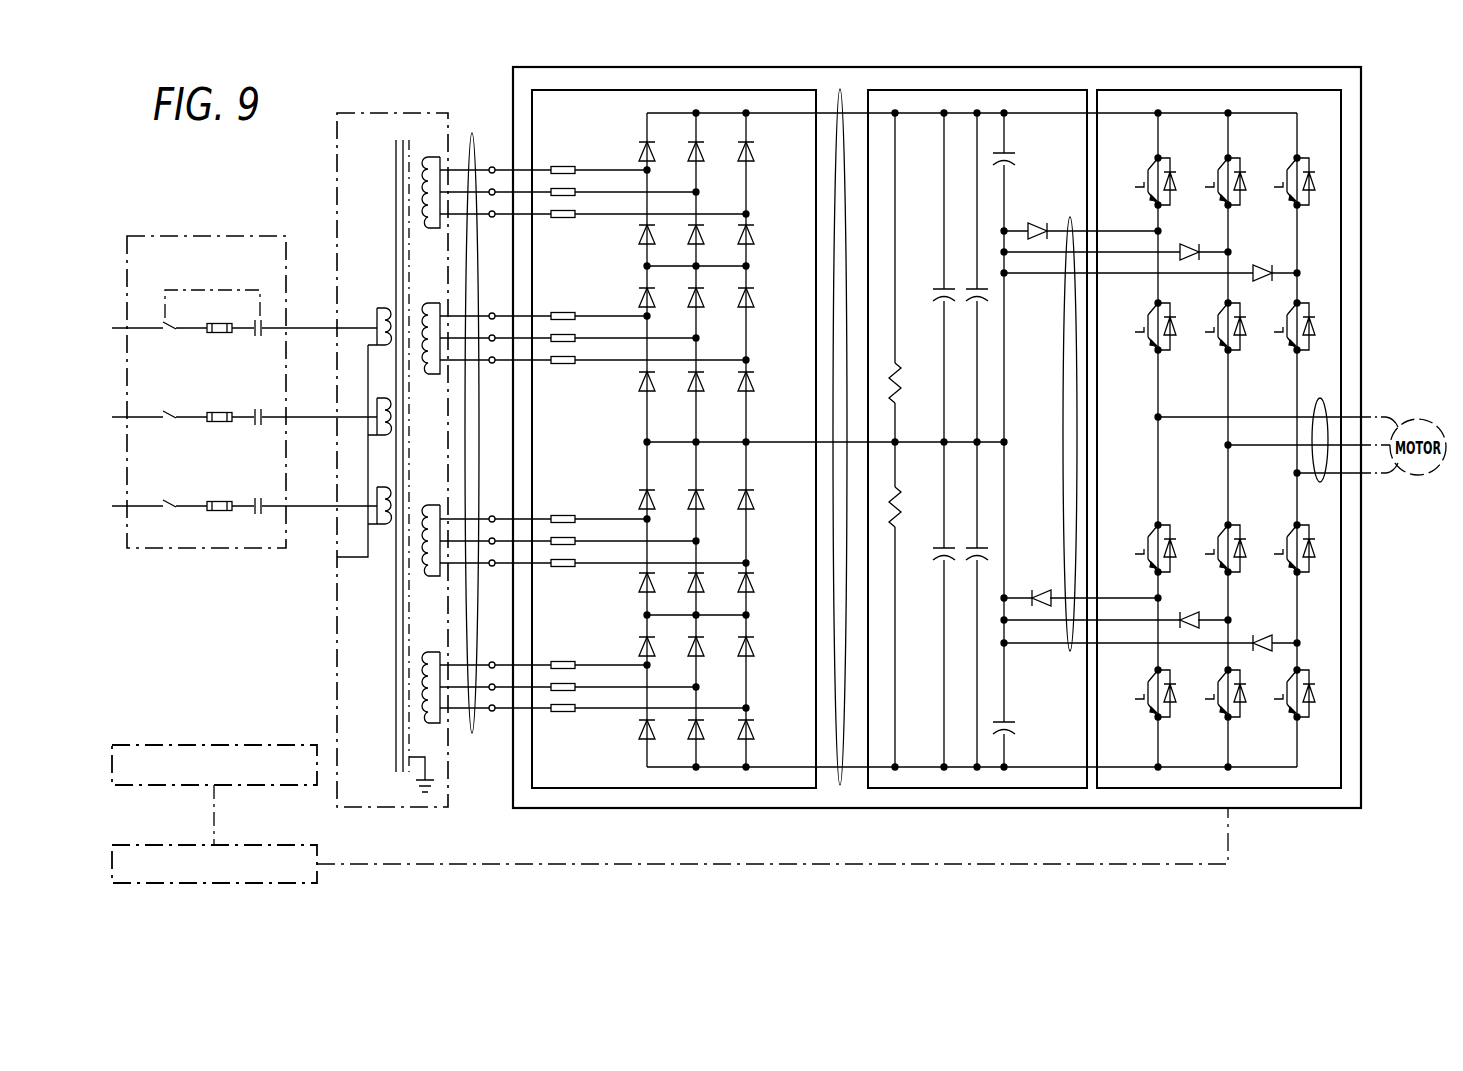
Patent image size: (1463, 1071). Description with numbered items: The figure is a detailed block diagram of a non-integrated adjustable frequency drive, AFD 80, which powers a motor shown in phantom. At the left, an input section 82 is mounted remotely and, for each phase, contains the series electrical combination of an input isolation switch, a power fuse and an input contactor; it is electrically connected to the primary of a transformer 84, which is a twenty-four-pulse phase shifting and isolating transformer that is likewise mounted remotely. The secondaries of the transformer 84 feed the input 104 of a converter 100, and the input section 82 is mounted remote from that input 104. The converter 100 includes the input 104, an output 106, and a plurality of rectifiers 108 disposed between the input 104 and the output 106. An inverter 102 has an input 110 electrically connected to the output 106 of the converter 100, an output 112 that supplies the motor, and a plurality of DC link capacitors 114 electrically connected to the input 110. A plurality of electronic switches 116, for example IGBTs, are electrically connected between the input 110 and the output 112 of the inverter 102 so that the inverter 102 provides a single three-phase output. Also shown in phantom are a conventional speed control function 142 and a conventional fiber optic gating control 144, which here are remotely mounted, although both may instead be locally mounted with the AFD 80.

The adjustable frequency drive 80 is at (1362, 752).
The input section 82 is at (198, 236).
The transformer 84 is at (365, 113).
The converter 100 is at (651, 90).
The inverter 102 is at (1190, 90).
The input of the converter 104 is at (471, 134).
The output of the converter 106 is at (840, 90).
The rectifiers 108 is at (749, 163).
The input of the inverter 110 is at (1068, 218).
The output of the inverter 112 is at (1318, 398).
The DC link capacitors 114 is at (933, 726).
The electronic switches 116 is at (1292, 160).
The speed control function 142 is at (193, 745).
The fiber optic gating control 144 is at (170, 845).